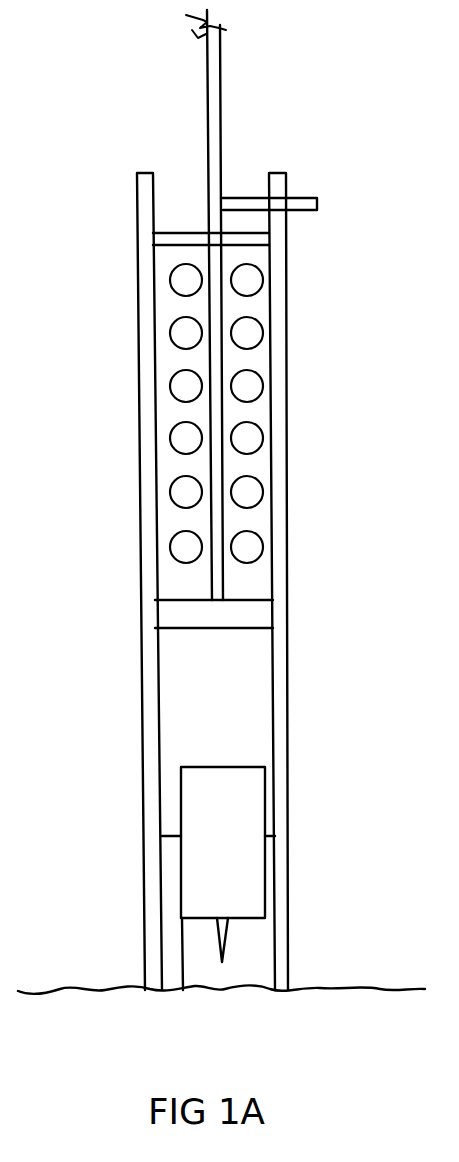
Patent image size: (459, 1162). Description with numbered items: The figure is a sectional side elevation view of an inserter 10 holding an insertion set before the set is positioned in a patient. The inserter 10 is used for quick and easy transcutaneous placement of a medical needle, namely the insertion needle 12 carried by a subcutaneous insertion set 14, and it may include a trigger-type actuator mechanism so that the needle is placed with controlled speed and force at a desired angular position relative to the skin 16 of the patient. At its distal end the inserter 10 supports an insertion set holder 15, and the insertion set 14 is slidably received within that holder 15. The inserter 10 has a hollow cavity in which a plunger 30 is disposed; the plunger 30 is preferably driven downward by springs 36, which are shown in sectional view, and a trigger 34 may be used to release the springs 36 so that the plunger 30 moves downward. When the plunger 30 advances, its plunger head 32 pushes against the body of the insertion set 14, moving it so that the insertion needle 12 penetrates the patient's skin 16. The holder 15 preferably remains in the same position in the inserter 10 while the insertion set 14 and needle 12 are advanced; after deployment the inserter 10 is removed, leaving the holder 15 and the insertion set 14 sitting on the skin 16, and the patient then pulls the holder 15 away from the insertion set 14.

The inserter 10 is at (289, 492).
The insertion needle 12 is at (217, 941).
The insertion set 14 is at (212, 862).
The insertion set holder 15 is at (173, 907).
The skin 16 is at (350, 988).
The plunger 30 is at (213, 421).
The plunger head 32 is at (230, 630).
The trigger 34 is at (303, 198).
The springs 36 is at (243, 336).